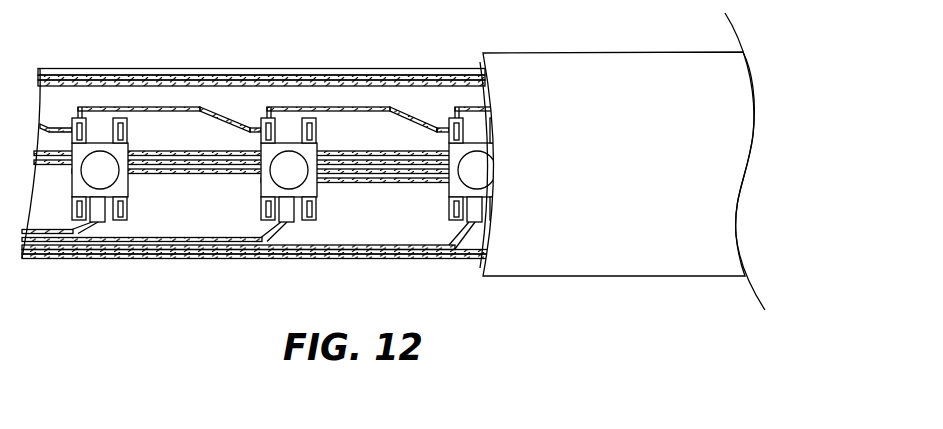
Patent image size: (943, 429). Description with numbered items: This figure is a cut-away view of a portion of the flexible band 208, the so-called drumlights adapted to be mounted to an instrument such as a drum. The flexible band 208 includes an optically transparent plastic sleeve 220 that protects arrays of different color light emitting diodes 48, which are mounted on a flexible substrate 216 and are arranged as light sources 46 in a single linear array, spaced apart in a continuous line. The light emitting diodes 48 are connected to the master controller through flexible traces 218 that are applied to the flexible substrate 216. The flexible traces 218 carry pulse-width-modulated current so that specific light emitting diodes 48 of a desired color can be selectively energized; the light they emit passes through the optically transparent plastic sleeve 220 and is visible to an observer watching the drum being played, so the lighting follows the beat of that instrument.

The light sources 46 is at (258, 173).
The light emitting diodes 48 is at (100, 140).
The flexible band 208 is at (622, 192).
The flexible substrate 216 is at (100, 93).
The flexible traces 218 is at (322, 73).
The optically transparent plastic sleeve 220 is at (658, 277).